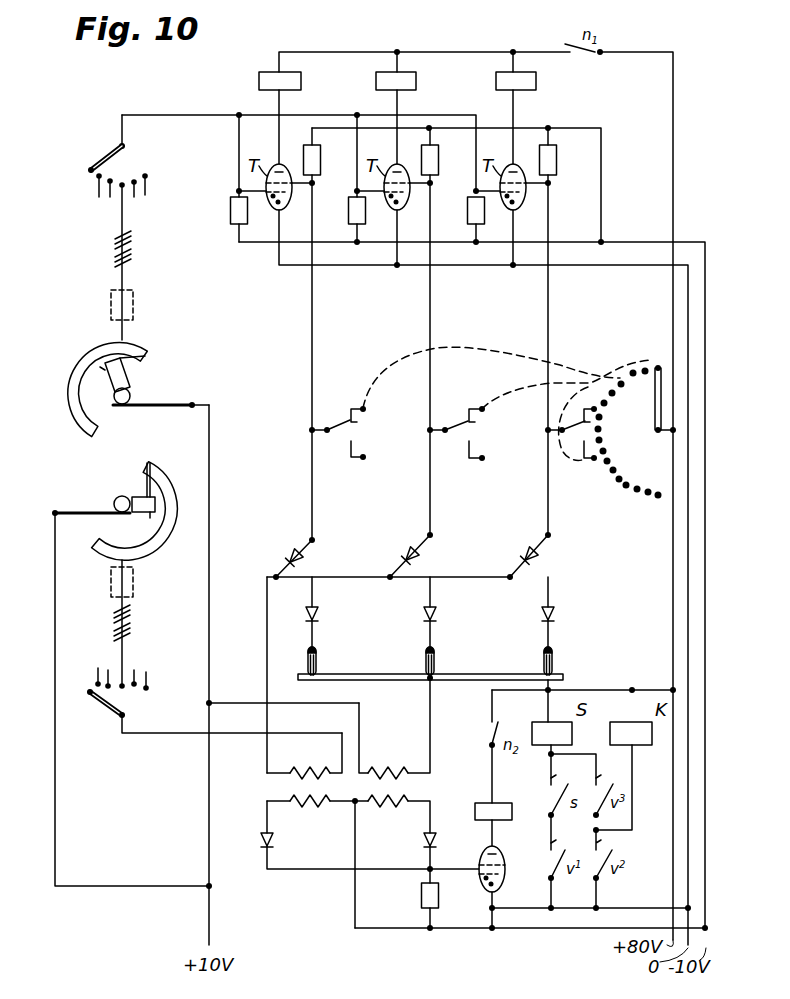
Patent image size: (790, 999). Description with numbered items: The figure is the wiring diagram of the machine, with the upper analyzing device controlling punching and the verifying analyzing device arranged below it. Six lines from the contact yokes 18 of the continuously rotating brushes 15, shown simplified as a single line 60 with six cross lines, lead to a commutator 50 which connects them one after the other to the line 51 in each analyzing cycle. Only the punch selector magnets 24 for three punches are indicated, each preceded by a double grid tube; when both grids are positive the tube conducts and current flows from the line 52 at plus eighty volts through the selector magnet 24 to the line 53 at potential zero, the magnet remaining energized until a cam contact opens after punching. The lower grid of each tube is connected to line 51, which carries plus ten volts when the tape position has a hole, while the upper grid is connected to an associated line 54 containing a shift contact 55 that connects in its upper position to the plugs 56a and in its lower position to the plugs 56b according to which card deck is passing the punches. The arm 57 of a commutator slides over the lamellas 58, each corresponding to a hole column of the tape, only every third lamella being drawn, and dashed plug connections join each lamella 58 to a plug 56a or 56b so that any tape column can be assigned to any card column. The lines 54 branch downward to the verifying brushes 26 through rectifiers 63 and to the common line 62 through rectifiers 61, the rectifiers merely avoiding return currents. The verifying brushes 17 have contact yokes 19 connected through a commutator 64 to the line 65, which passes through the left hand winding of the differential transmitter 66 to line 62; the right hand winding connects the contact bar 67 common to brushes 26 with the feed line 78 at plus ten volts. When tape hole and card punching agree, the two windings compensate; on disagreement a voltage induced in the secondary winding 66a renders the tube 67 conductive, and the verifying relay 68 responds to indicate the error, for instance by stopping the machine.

The brushes 15 is at (139, 362).
The brushes 17 is at (147, 485).
The contact yokes 18 is at (92, 355).
The contact yokes 19 is at (152, 545).
The punch selector magnets 24 is at (541, 84).
The verifying brushes 26 is at (427, 665).
The commutator 50 is at (123, 177).
The line 51 is at (193, 114).
The line 52 is at (637, 50).
The line 53 is at (688, 314).
The lines 54 is at (547, 349).
The shift contact 55 is at (345, 432).
The plugs 56a is at (480, 408).
The plugs 56b is at (480, 460).
The arm 57 is at (656, 372).
The lamellas 58 is at (646, 492).
The line 60 is at (115, 231).
The rectifiers 61 is at (405, 556).
The common line 62 is at (267, 632).
The rectifiers 63 is at (430, 616).
The commutator 64 is at (90, 660).
The line 65 is at (155, 734).
The differential transmitter 66 is at (318, 767).
The secondary winding 66a is at (315, 815).
The contact bar 67 is at (525, 678).
The verifying relay 68 is at (506, 808).
The feed line 78 is at (209, 845).